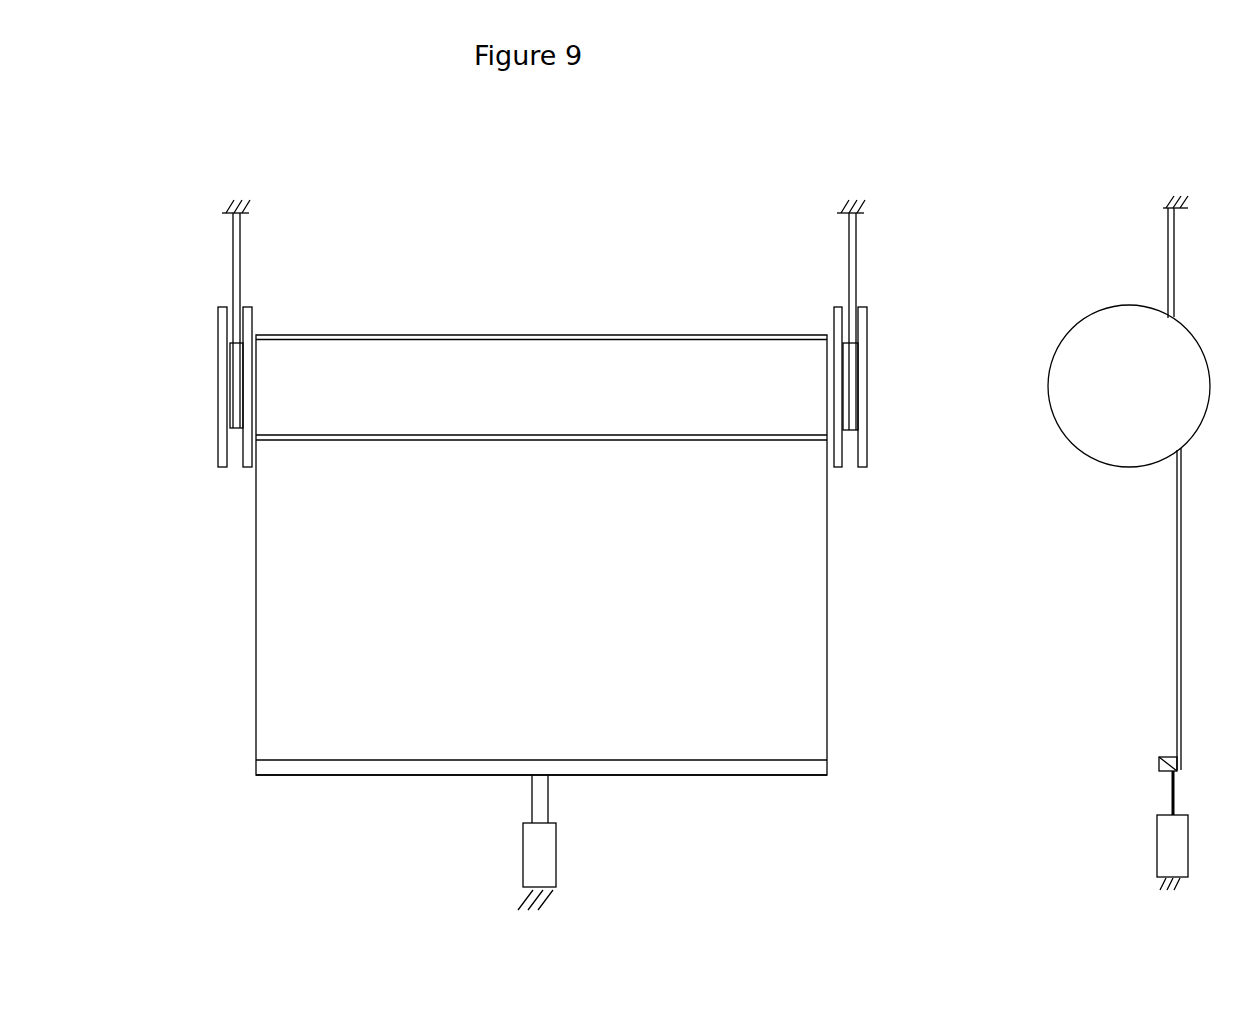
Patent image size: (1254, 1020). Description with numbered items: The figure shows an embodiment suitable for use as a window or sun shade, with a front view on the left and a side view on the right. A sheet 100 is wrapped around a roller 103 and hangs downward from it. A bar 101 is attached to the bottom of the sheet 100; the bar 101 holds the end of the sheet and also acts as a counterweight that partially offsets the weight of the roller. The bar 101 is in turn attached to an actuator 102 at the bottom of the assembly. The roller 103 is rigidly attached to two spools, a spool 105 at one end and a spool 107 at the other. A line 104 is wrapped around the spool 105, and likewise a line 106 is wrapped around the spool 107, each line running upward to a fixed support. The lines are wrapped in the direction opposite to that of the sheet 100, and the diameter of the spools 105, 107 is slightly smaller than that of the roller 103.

The sheet 100 is at (1176, 557).
The bar 101 is at (637, 768).
The actuator 102 is at (538, 848).
The roller 103 is at (257, 338).
The line 104 is at (851, 244).
The spool 105 is at (863, 396).
The line 106 is at (238, 252).
The spool 107 is at (220, 397).